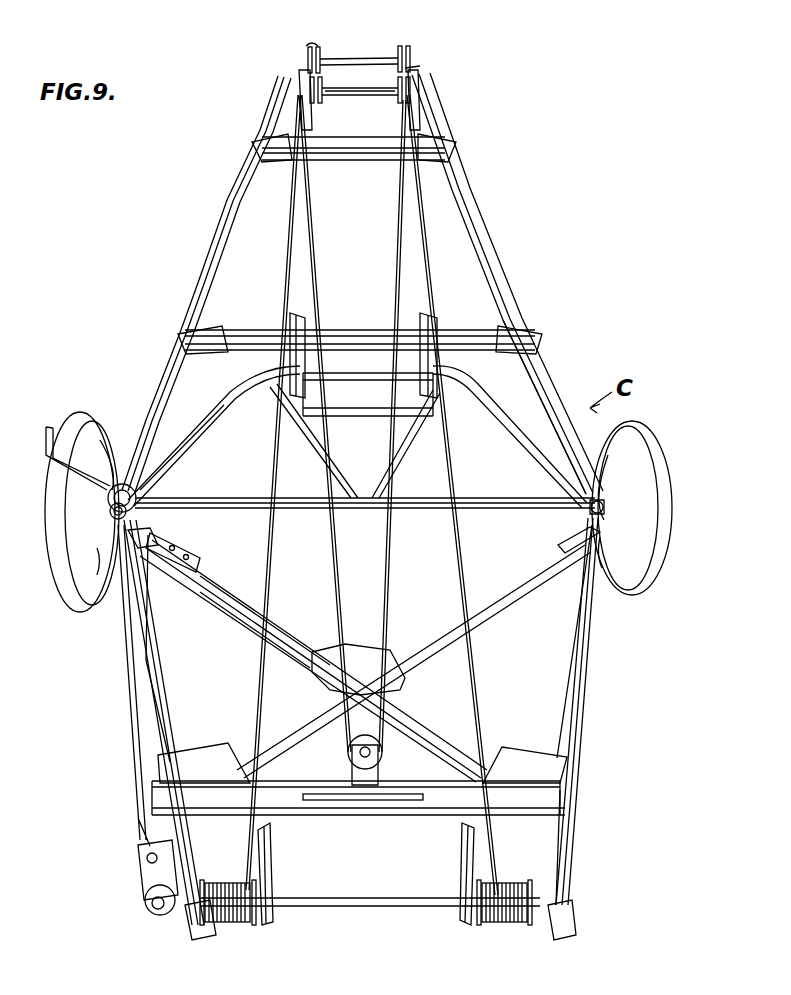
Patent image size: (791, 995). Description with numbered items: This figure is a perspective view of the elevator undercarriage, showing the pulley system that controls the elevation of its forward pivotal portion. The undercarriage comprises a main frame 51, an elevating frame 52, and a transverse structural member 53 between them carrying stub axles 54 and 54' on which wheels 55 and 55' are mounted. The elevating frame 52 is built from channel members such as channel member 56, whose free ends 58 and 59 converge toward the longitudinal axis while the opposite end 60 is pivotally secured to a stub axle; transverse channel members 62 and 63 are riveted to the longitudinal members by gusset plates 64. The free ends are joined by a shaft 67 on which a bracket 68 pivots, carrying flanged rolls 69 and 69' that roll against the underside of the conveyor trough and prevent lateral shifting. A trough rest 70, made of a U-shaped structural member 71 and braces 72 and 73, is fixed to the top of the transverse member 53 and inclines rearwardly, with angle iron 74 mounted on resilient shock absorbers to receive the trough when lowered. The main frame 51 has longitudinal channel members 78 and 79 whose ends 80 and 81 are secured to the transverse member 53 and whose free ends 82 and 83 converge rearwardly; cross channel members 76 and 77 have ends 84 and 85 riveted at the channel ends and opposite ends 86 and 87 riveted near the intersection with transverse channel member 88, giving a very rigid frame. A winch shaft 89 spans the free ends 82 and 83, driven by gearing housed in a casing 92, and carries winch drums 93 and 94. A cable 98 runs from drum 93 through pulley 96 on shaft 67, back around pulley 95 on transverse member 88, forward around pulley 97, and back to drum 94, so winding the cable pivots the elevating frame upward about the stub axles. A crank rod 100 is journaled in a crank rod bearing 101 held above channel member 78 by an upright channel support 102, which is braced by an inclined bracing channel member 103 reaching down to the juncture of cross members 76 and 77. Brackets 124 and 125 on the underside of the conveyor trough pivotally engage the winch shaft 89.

The main frame 51 is at (598, 724).
The elevating frame 52 is at (536, 294).
The transverse structural member 53 is at (478, 498).
The stub axle 54 is at (74, 514).
The stub axle 54' is at (654, 520).
The wheel 55 is at (82, 496).
The wheel 55' is at (650, 508).
The channel member 56 is at (242, 222).
The free end 58 is at (305, 68).
The free end 59 is at (428, 88).
The opposite end 60 is at (168, 446).
The channel member 62 is at (268, 334).
The channel member 63 is at (368, 158).
The gusset plate 64 is at (262, 146).
The shaft 67 is at (368, 96).
The bracket 68 is at (412, 68).
The roll 69 is at (360, 82).
The roll 69' is at (359, 49).
The trough rest 70 is at (530, 403).
The U-shaped structural member 71 is at (166, 392).
The brace 72 is at (300, 446).
The brace 73 is at (420, 448).
The angle iron 74 is at (420, 330).
The cross channel member 76 is at (272, 718).
The cross channel member 77 is at (290, 618).
The channel member 78 is at (160, 740).
The channel member 79 is at (564, 732).
The end 80 is at (142, 600).
The end 81 is at (604, 580).
The free end 82 is at (186, 862).
The free end 83 is at (566, 838).
The end 84 is at (158, 570).
The end 85 is at (570, 575).
The opposite end 86 is at (232, 742).
The opposite end 87 is at (488, 740).
The transverse channel member 88 is at (380, 816).
The winch shaft 89 is at (330, 916).
The casing 92 is at (138, 882).
The winch drum 93 is at (230, 926).
The winch drum 94 is at (506, 926).
The single sheaved pulley 95 is at (384, 752).
The single sheaved pulley 96 is at (312, 50).
The single sheaved pulley 97 is at (420, 66).
The cable 98 is at (268, 586).
The crank rod 100 is at (142, 784).
The crank rod bearing 101 is at (180, 528).
The upright channel support 102 is at (147, 650).
The inclined bracing channel member 103 is at (252, 624).
The bracket 124 is at (272, 868).
The bracket 125 is at (466, 868).